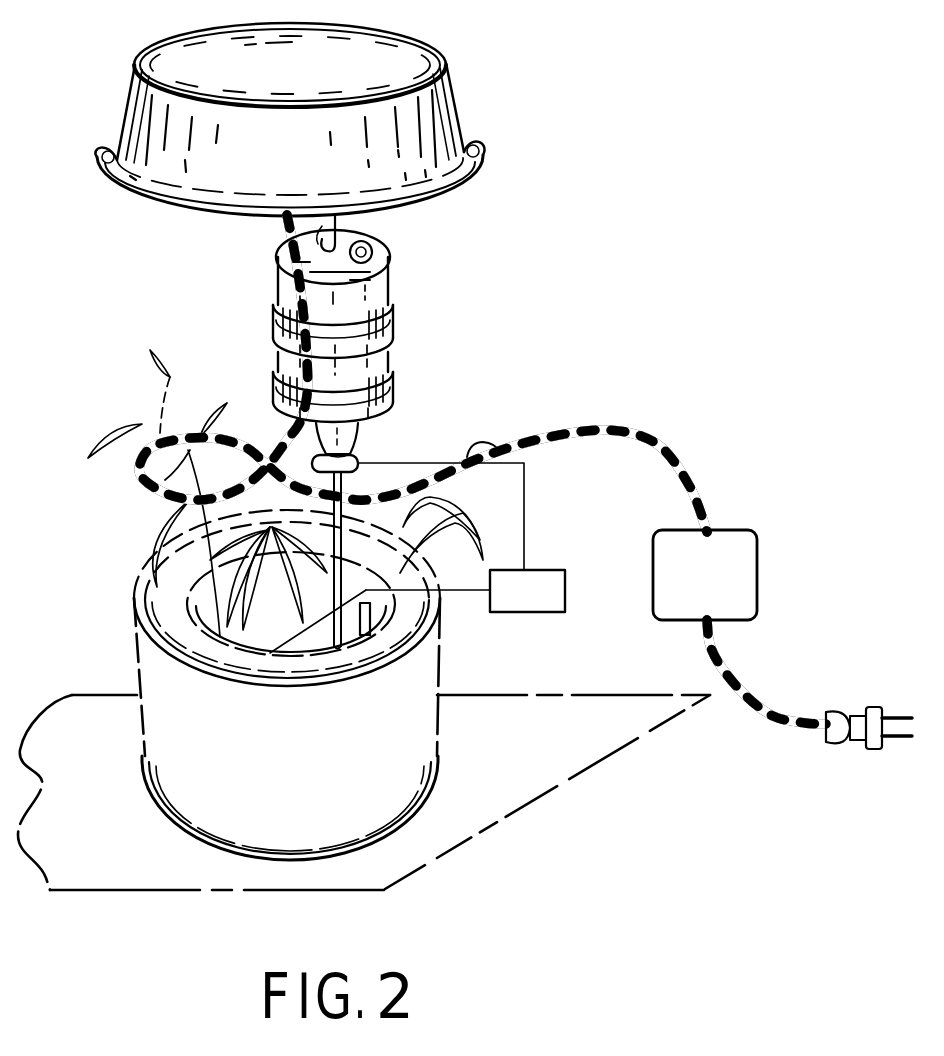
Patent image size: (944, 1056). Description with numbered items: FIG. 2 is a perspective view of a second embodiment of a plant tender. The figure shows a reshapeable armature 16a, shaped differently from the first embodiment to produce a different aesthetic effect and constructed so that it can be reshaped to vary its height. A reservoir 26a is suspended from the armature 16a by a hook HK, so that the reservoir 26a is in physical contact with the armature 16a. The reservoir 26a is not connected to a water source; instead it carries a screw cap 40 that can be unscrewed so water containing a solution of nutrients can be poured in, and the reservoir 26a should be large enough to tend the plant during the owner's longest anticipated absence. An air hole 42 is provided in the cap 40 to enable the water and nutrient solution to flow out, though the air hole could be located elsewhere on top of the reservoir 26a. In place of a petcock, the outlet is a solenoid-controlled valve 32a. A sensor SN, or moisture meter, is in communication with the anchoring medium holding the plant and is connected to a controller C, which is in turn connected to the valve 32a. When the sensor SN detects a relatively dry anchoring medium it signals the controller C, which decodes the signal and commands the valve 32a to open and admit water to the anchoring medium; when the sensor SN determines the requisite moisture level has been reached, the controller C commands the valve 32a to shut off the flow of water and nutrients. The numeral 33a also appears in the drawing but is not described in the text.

The armature 16a is at (134, 494).
The reservoir 26a is at (396, 345).
The solenoid-controlled valve 32a is at (358, 458).
The sensor probe 33a is at (371, 604).
The screw cap 40 is at (384, 254).
The air hole 42 is at (372, 247).
The hook HK is at (320, 237).
The sensor SN is at (381, 637).
The controller C is at (535, 613).